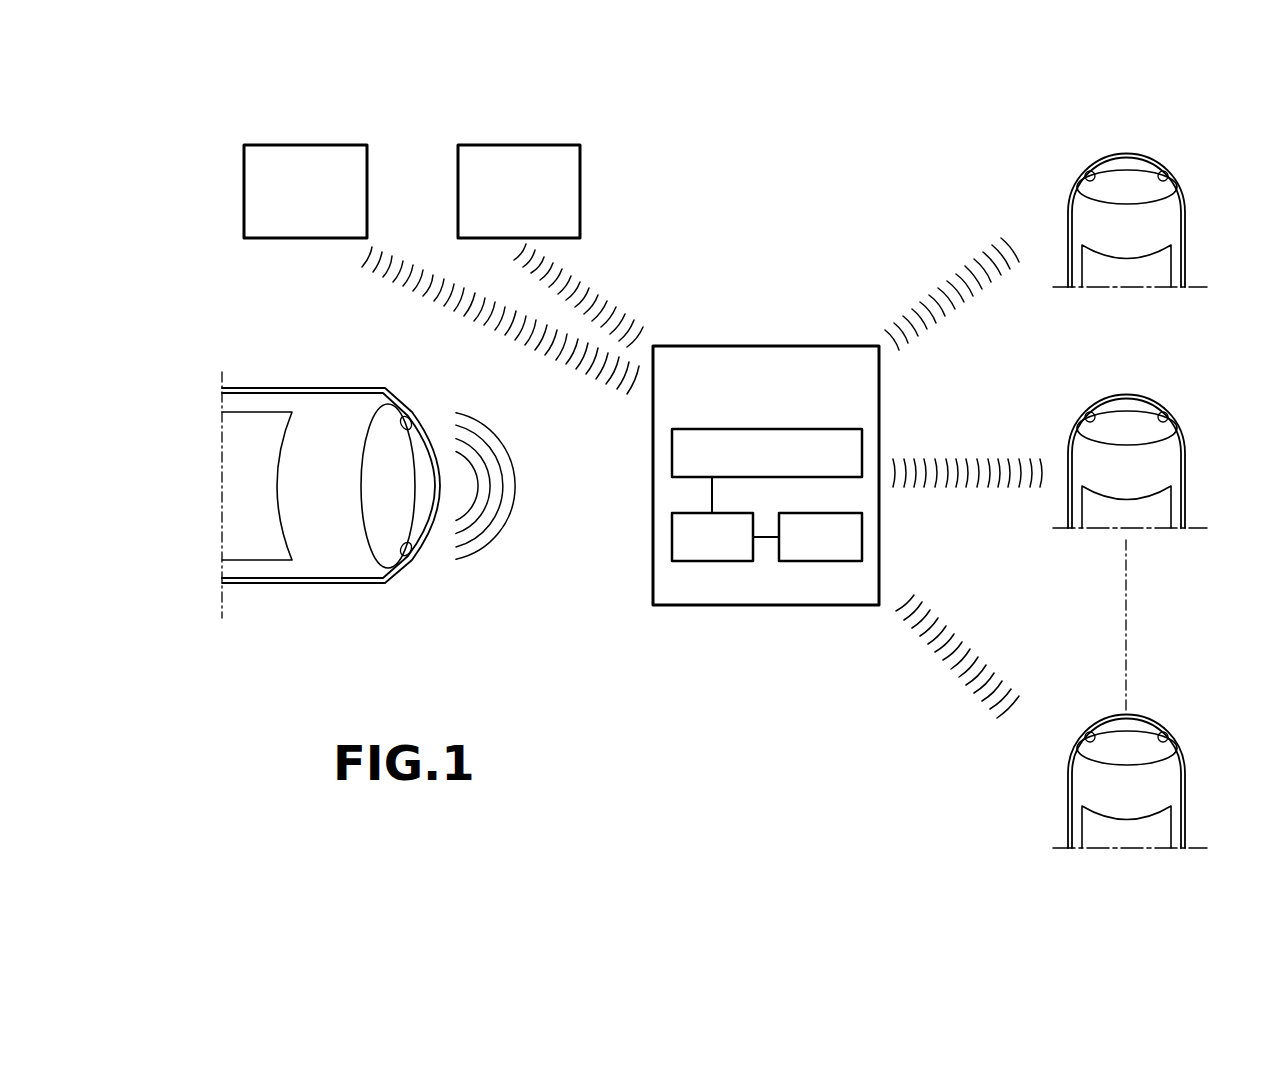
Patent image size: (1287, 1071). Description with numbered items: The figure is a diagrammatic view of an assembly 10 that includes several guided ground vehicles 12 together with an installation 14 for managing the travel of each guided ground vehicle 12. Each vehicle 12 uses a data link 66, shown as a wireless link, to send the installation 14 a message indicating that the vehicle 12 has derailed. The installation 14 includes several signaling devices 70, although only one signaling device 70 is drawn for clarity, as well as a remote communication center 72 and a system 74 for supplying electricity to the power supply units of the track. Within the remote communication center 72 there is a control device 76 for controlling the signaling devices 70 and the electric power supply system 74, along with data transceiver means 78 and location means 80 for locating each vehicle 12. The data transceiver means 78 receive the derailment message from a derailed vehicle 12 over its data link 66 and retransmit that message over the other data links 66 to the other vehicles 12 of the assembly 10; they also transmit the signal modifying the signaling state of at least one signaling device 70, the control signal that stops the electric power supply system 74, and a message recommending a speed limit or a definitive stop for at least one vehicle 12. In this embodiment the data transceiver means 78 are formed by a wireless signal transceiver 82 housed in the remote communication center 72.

The assembly 10 is at (214, 88).
The guided ground vehicle 12 is at (317, 407).
The installation for managing the travel of each guided ground vehicle 14 is at (669, 294).
The data link 66 is at (507, 492).
The signaling device 70 is at (303, 145).
The remote communication center 72 is at (777, 346).
The system for supplying electricity 74 is at (520, 145).
The control device 76 is at (712, 537).
The data transceiver means 78 is at (741, 410).
The location means 80 is at (820, 537).
The wireless signal transceiver 82 is at (767, 453).